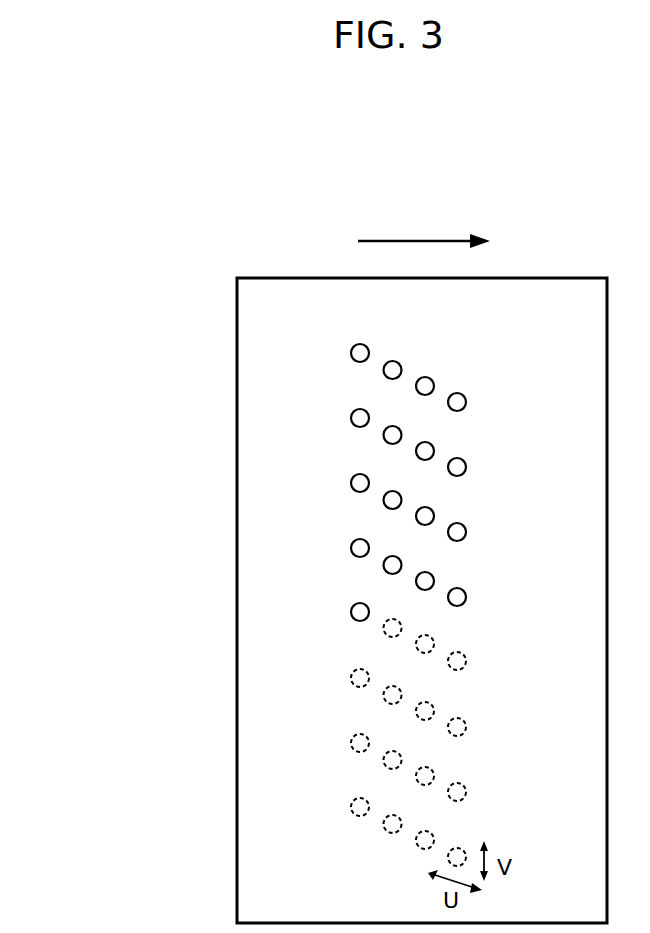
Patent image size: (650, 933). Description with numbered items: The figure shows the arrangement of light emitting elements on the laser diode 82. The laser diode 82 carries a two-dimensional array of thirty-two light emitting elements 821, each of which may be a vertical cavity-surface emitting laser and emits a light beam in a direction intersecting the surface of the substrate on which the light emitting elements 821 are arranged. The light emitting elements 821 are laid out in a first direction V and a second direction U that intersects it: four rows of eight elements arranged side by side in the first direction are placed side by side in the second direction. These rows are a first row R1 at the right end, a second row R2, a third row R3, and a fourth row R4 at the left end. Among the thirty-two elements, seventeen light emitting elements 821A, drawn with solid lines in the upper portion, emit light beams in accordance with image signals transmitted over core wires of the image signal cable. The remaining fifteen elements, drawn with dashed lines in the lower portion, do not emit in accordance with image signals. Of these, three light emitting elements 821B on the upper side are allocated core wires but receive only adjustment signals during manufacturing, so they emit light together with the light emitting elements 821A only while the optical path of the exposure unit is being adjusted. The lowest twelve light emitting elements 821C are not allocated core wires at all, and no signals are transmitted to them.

The laser diode 82 is at (297, 278).
The light emitting elements 821 is at (113, 380).
The light emitting elements (image-signal driven) 821A is at (383, 371).
The light emitting elements (adjustment only) 821B is at (447, 661).
The light emitting elements (unallocated) 821C is at (384, 696).
The first row R1 is at (458, 384).
The second row R2 is at (426, 368).
The third row R3 is at (393, 352).
The fourth row R4 is at (361, 335).